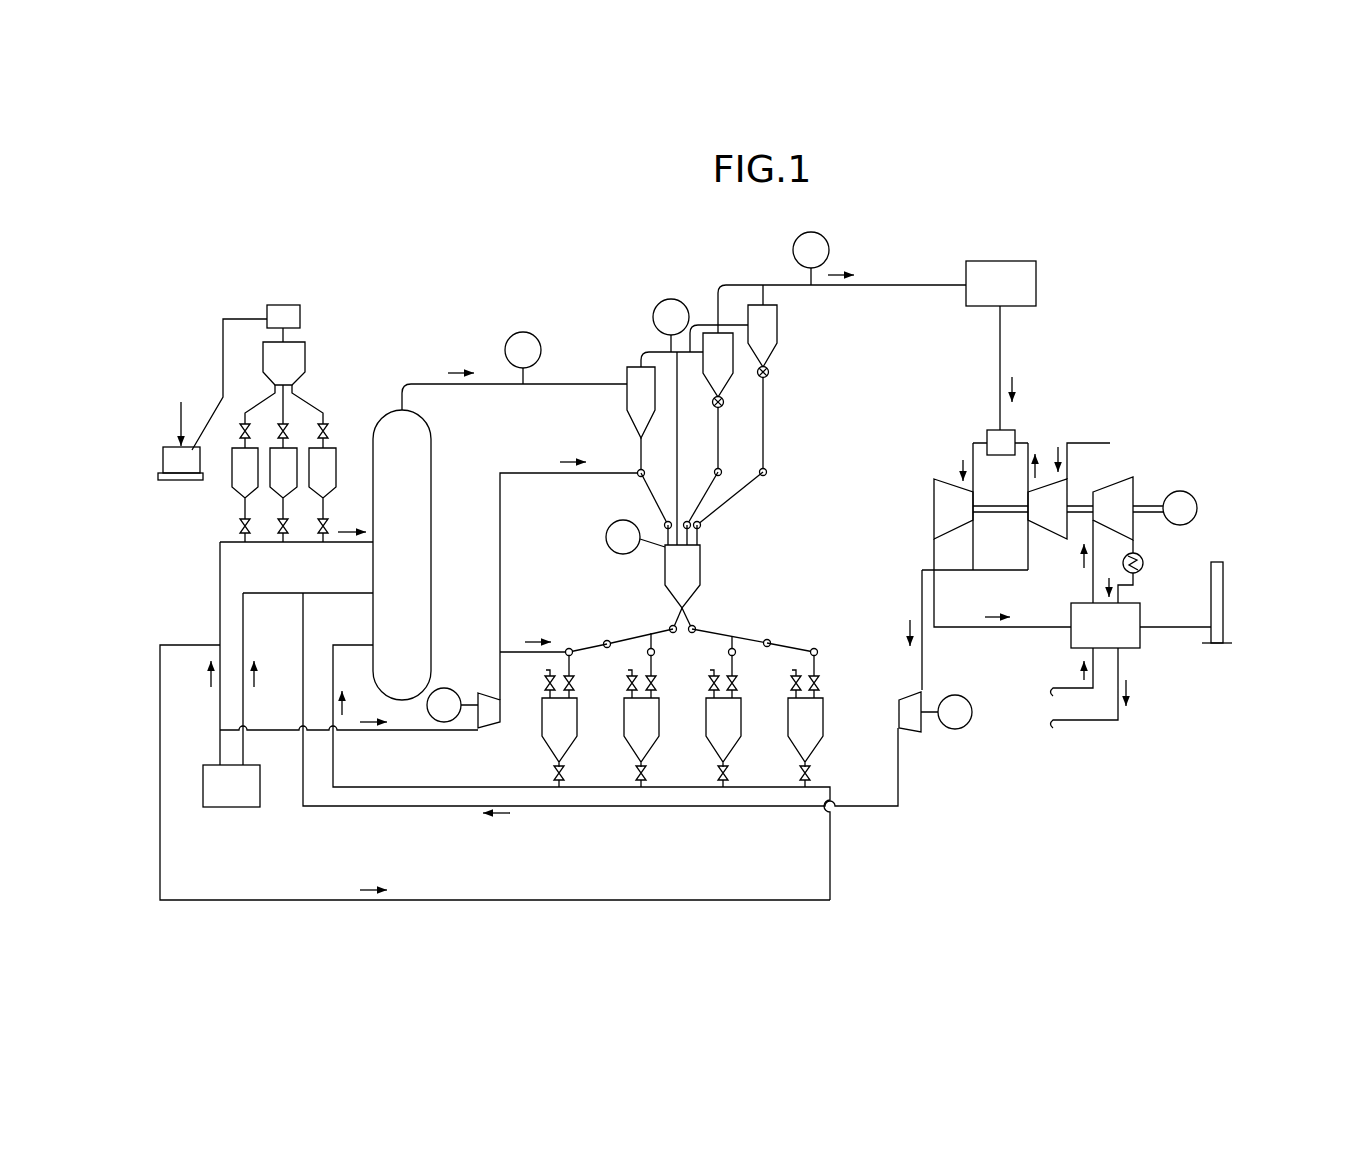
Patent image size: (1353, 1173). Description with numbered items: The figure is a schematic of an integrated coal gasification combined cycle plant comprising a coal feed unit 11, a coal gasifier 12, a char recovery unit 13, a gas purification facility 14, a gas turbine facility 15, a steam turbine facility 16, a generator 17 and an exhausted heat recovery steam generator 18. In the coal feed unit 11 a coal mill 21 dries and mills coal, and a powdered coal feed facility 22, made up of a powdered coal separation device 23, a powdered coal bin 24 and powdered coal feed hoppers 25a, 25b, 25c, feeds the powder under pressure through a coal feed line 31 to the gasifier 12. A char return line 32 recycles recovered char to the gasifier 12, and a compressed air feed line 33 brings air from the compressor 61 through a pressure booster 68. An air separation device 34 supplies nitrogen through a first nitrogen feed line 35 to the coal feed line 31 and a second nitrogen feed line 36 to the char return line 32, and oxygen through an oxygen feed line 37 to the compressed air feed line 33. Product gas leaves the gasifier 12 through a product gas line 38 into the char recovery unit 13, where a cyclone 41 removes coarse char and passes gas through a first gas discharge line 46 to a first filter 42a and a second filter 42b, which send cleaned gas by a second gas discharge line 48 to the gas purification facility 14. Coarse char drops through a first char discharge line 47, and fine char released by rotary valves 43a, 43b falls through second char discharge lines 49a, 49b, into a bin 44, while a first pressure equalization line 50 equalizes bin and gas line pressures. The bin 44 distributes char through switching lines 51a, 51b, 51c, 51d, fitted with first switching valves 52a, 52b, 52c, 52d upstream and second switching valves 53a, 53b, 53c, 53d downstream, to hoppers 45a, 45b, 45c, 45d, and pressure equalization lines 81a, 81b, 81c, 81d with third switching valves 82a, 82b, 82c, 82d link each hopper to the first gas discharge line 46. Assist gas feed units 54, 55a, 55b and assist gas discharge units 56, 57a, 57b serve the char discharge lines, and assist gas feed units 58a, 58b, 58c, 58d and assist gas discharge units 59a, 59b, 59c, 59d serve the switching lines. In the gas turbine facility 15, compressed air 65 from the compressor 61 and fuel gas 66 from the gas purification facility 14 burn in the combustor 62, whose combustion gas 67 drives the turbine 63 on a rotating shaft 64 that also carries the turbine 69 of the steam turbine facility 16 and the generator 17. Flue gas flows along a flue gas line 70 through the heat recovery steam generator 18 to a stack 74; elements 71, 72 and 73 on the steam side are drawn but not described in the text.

The coal feed unit 11 is at (199, 351).
The coal gasifier 12 is at (384, 400).
The char recovery unit 13 is at (644, 289).
The gas purification facility 14 is at (1006, 254).
The gas turbine facility 15 is at (933, 449).
The steam turbine facility 16 is at (1134, 461).
The generator 17 is at (1191, 489).
The exhausted heat recovery steam generator 18 is at (1136, 661).
The coal mill 21 is at (201, 460).
The powdered coal feed facility 22 is at (267, 279).
The powdered coal separation device 23 is at (289, 305).
The powdered coal bin 24 is at (305, 370).
The powdered coal feed hopper 25a is at (258, 488).
The powdered coal feed hopper 25b is at (297, 488).
The powdered coal feed hopper 25c is at (336, 488).
The coal feed line 31 is at (346, 545).
The char return line 32 is at (525, 681).
The compressed air feed line 33 is at (373, 810).
The air separation device 34 is at (236, 807).
The first nitrogen feed line 35 is at (218, 580).
The second nitrogen feed line 36 is at (313, 898).
The oxygen feed line 37 is at (268, 592).
The product gas line 38 is at (573, 387).
The cyclone 41 is at (635, 370).
The first filter 42a is at (705, 337).
The second filter 42b is at (770, 313).
The rotary valve 43a is at (715, 408).
The rotary valve 43b is at (760, 378).
The bin 44 is at (663, 566).
The hopper 45a is at (537, 730).
The hopper 45b is at (620, 730).
The hopper 45c is at (702, 730).
The hopper 45d is at (785, 730).
The first gas discharge line 46 is at (655, 350).
The first char discharge line 47 is at (638, 443).
The second gas discharge line 48 is at (948, 288).
The second char discharge line 49a is at (722, 448).
The second char discharge line 49b is at (744, 492).
The first pressure equalization line 50 is at (676, 468).
The switching line 51a is at (581, 647).
The switching line 51b is at (653, 630).
The switching line 51c is at (711, 632).
The switching line 51d is at (797, 645).
The first switching valve 52a is at (575, 683).
The first switching valve 52b is at (657, 683).
The first switching valve 52c is at (738, 683).
The first switching valve 52d is at (820, 683).
The second switching valve 53a is at (547, 785).
The second switching valve 53b is at (629, 785).
The second switching valve 53c is at (711, 785).
The second switching valve 53d is at (793, 785).
The assist gas feed unit 54 is at (638, 477).
The assist gas feed unit 55a is at (714, 470).
The assist gas feed unit 55b is at (767, 472).
The assist gas discharge unit 56 is at (665, 523).
The assist gas discharge unit 57a is at (696, 540).
The assist gas discharge unit 57b is at (701, 527).
The assist gas feed unit 58a is at (601, 640).
The assist gas feed unit 58b is at (667, 627).
The assist gas feed unit 58c is at (698, 626).
The assist gas feed unit 58d is at (773, 640).
The assist gas discharge unit 59a is at (574, 655).
The assist gas discharge unit 59b is at (657, 655).
The assist gas discharge unit 59c is at (738, 655).
The assist gas discharge unit 59d is at (820, 655).
The compressor 61 is at (1050, 528).
The combustor 62 is at (1008, 428).
The turbine 63 is at (942, 502).
The rotating shaft 64 is at (1001, 515).
The compressed air 65 is at (1028, 470).
The fuel gas 66 is at (1000, 342).
The combustion gas 67 is at (961, 455).
The pressure booster 68 is at (912, 734).
The turbine 69 is at (1127, 493).
The flue gas line 70 is at (972, 632).
The steam line 71 is at (1090, 588).
The steam return line 72 is at (1137, 543).
The condenser 73 is at (1143, 567).
The stack 74 is at (1223, 577).
The pressure equalization line 81a is at (545, 696).
The pressure equalization line 81b is at (626, 702).
The pressure equalization line 81c is at (708, 702).
The pressure equalization line 81d is at (790, 702).
The third switching valve 82a is at (547, 686).
The third switching valve 82b is at (628, 688).
The third switching valve 82c is at (710, 688).
The third switching valve 82d is at (792, 688).